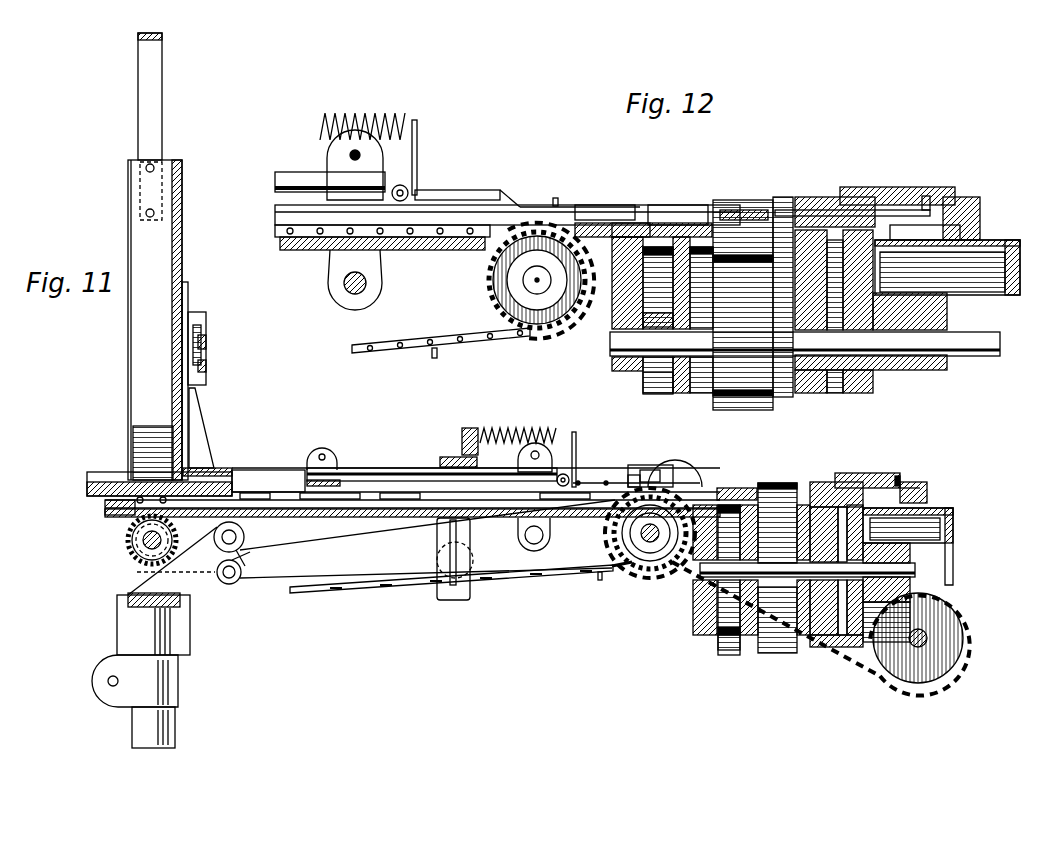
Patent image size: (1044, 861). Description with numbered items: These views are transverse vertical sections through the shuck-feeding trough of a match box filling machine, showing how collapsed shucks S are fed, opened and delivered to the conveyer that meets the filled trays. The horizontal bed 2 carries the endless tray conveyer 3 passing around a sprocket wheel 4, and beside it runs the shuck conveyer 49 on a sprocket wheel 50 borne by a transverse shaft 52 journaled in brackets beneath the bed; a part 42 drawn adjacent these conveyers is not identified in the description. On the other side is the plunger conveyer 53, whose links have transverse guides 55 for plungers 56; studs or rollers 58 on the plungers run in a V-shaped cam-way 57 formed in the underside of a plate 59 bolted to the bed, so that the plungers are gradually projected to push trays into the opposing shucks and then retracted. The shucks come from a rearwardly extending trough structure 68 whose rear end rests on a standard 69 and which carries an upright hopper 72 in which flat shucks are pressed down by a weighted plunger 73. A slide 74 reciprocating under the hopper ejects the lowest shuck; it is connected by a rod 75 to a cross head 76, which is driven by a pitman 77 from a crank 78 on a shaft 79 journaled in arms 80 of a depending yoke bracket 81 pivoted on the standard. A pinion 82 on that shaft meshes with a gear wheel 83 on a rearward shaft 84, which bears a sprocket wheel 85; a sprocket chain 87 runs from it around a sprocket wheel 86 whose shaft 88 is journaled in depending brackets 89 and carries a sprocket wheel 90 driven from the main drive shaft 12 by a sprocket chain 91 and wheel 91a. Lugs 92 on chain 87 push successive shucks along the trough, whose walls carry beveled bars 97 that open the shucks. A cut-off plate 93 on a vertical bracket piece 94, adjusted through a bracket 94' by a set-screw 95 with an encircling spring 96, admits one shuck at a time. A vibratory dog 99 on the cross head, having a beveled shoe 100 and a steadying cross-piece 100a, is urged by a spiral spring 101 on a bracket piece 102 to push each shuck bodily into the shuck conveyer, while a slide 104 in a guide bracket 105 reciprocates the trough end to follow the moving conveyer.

In FIG. 11, the horizontal bed 2 is at (935, 528).
In FIG. 12, the horizontal bed 2 is at (990, 285).
In FIG. 11, the endless tray conveyer 3 is at (780, 485).
In FIG. 12, the endless tray conveyer 3 is at (735, 200).
In FIG. 11, the sprocket wheel 4 is at (785, 620).
In FIG. 11, the main drive shaft 12 is at (930, 637).
In FIG. 12, the gear hub 42 is at (748, 222).
In FIG. 11, the shuck conveyer 49 is at (740, 487).
In FIG. 12, the shuck conveyer 49 is at (685, 207).
In FIG. 11, the sprocket wheel 50 is at (725, 615).
In FIG. 12, the sprocket wheel 50 is at (668, 385).
In FIG. 11, the transverse shaft 52 is at (912, 570).
In FIG. 12, the transverse shaft 52 is at (610, 345).
In FIG. 11, the plunger conveyer 53 is at (820, 495).
In FIG. 12, the plunger conveyer 53 is at (812, 220).
In FIG. 12, the transverse guides 55 is at (870, 212).
In FIG. 11, the plungers 56 is at (865, 475).
In FIG. 12, the plungers 56 is at (782, 208).
In FIG. 11, the V-shaped cam-way 57 is at (908, 488).
In FIG. 12, the V-shaped cam-way 57 is at (928, 196).
In FIG. 11, the studs or rollers 58 is at (915, 485).
In FIG. 12, the studs or rollers 58 is at (945, 193).
In FIG. 11, the plate 59 is at (899, 478).
In FIG. 12, the plate 59 is at (980, 204).
In FIG. 11, the trough structure 68 is at (105, 507).
In FIG. 11, the standard 69 is at (165, 738).
In FIG. 11, the upright hopper 72 is at (130, 340).
In FIG. 11, the weighted plunger 73 is at (152, 427).
In FIG. 11, the slide 74 is at (87, 487).
In FIG. 11, the rod 75 is at (366, 468).
In FIG. 12, the rod 75 is at (285, 178).
In FIG. 11, the cross head 76 is at (525, 450).
In FIG. 12, the cross head 76 is at (330, 162).
In FIG. 11, the pitman 77 is at (360, 568).
In FIG. 11, the crank 78 is at (248, 552).
In FIG. 11, the shaft 79 is at (245, 533).
In FIG. 11, the arms 80 is at (232, 585).
In FIG. 11, the depending yoke bracket 81 is at (128, 585).
In FIG. 11, the pinion 82 is at (245, 565).
In FIG. 11, the gear wheel 83 is at (128, 540).
In FIG. 11, the rearward shaft 84 is at (145, 545).
In FIG. 11, the sprocket wheel 85 is at (130, 556).
In FIG. 11, the sprocket wheel 86 is at (666, 562).
In FIG. 12, the sprocket wheel 86 is at (507, 283).
In FIG. 11, the sprocket chain 87 is at (505, 582).
In FIG. 12, the sprocket chain 87 is at (470, 346).
In FIG. 11, the shaft 88 is at (650, 545).
In FIG. 12, the shaft 88 is at (545, 285).
In FIG. 11, the depending brackets 89 is at (612, 530).
In FIG. 11, the sprocket wheel 90 is at (620, 570).
In FIG. 11, the sprocket chain 91 is at (876, 662).
In FIG. 11, the wheel 91a is at (915, 688).
In FIG. 11, the lugs 92 is at (325, 480).
In FIG. 12, the lugs 92 is at (434, 358).
In FIG. 11, the cut-off plate 93 is at (196, 468).
In FIG. 11, the vertical bracket piece 94 is at (220, 426).
In FIG. 11, the bracket 94' is at (206, 379).
In FIG. 11, the set-screw 95 is at (206, 335).
In FIG. 11, the encircling spring 96 is at (208, 345).
In FIG. 12, the bars 97 is at (278, 232).
In FIG. 11, the vibratory dog 99 is at (578, 478).
In FIG. 12, the vibratory dog 99 is at (500, 207).
In FIG. 11, the beveled shoe 100 is at (700, 482).
In FIG. 12, the beveled shoe 100 is at (580, 207).
In FIG. 11, the cross-piece 100a is at (632, 470).
In FIG. 12, the cross-piece 100a is at (555, 200).
In FIG. 11, the spiral spring 101 is at (540, 430).
In FIG. 12, the spiral spring 101 is at (386, 113).
In FIG. 11, the bracket piece 102 is at (465, 455).
In FIG. 11, the slide 104 is at (650, 467).
In FIG. 11, the guide bracket 105 is at (690, 462).
In FIG. 12, the box shucks S is at (300, 208).